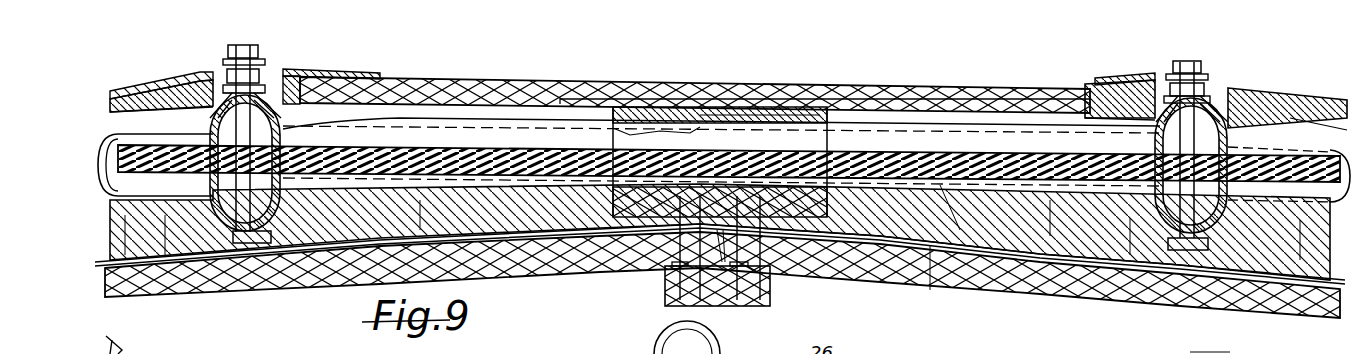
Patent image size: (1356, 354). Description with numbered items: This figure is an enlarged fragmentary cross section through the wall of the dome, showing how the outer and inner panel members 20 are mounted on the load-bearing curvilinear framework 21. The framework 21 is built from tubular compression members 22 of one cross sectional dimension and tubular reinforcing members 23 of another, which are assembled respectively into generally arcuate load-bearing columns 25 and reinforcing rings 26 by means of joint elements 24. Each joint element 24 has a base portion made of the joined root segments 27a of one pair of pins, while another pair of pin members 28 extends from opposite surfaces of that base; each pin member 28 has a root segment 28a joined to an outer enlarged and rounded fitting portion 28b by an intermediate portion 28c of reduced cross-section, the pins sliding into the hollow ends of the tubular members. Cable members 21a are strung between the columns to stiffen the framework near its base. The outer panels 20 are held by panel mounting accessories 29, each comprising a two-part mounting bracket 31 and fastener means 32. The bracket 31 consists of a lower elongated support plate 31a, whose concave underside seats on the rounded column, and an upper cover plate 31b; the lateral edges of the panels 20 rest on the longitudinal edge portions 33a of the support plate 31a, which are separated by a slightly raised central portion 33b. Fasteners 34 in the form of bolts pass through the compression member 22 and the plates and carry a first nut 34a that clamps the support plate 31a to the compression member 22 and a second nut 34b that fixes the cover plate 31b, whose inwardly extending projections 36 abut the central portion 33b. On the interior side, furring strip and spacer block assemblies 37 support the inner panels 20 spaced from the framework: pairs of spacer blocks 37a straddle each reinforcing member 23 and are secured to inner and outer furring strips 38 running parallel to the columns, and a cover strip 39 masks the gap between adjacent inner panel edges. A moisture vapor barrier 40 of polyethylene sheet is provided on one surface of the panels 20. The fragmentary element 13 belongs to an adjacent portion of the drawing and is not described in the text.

The adjacent figure element 13 is at (1210, 348).
The panel member 20 is at (914, 92).
The curvilinear framework 21 is at (318, 94).
The cable member 21a is at (946, 190).
The tubular compression member 22 is at (202, 128).
The tubular reinforcing member 23 is at (562, 116).
The joint element 24 is at (286, 252).
The load-bearing column 25 is at (1260, 96).
The reinforcing ring 26 is at (352, 124).
The root segment 27a is at (233, 236).
The pin member 28 is at (424, 112).
The root segment 28a is at (709, 228).
The fitting portion 28b is at (728, 218).
The intermediate portion 28c is at (709, 231).
The panel mounting accessory 29 is at (214, 86).
The two-part mounting bracket 31 is at (164, 92).
The support plate 31a is at (142, 114).
The cover plate 31b is at (137, 86).
The fastener means 32 is at (262, 74).
The longitudinal edge portion 33a is at (292, 98).
The raised central portion 33b is at (226, 92).
The fastener 34 is at (258, 245).
The first nut 34a is at (265, 63).
The second nut 34b is at (258, 52).
The spacer projection 36 is at (660, 250).
The furring strip and spacer block assembly 37 is at (830, 108).
The spacer block 37a is at (652, 130).
The furring strip 38 is at (736, 112).
The cover strip 39 is at (724, 306).
The moisture vapor barrier 40 is at (935, 270).